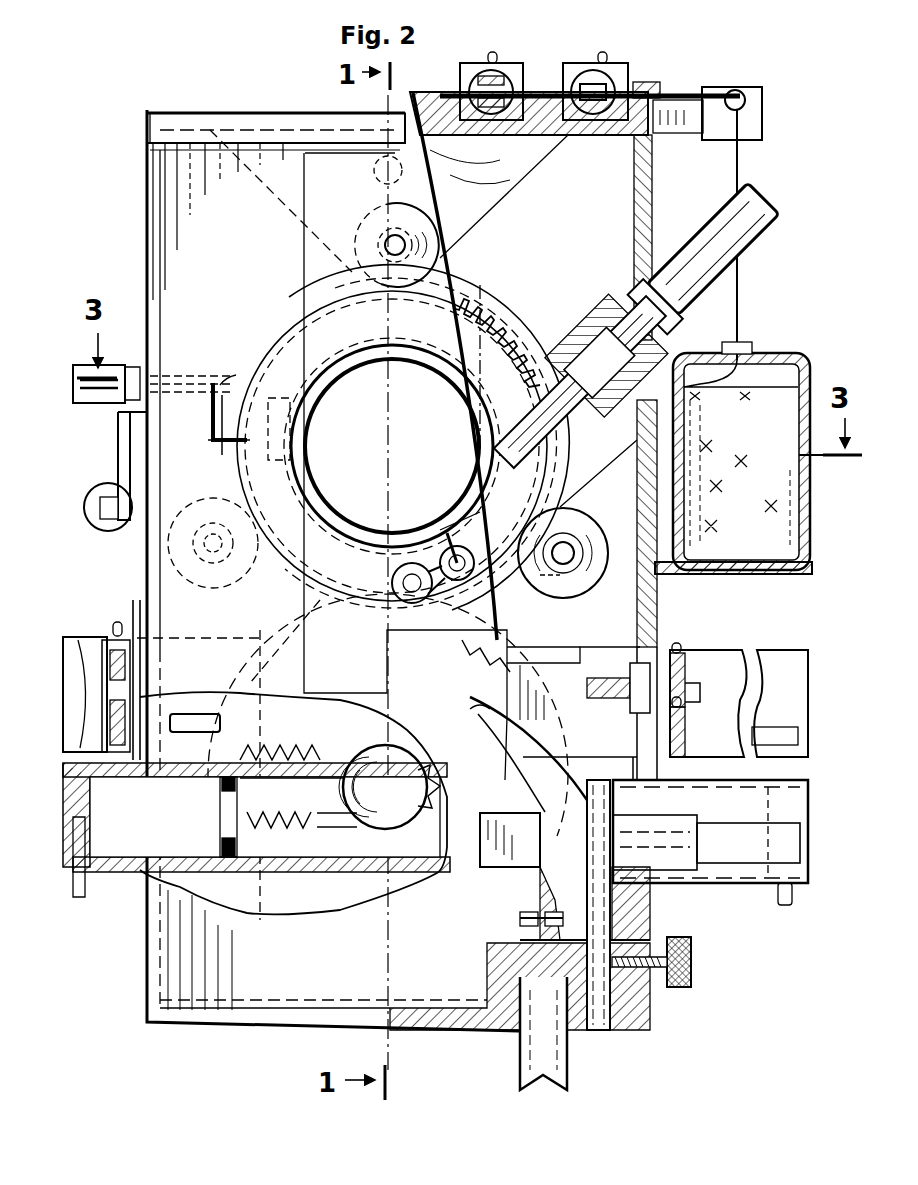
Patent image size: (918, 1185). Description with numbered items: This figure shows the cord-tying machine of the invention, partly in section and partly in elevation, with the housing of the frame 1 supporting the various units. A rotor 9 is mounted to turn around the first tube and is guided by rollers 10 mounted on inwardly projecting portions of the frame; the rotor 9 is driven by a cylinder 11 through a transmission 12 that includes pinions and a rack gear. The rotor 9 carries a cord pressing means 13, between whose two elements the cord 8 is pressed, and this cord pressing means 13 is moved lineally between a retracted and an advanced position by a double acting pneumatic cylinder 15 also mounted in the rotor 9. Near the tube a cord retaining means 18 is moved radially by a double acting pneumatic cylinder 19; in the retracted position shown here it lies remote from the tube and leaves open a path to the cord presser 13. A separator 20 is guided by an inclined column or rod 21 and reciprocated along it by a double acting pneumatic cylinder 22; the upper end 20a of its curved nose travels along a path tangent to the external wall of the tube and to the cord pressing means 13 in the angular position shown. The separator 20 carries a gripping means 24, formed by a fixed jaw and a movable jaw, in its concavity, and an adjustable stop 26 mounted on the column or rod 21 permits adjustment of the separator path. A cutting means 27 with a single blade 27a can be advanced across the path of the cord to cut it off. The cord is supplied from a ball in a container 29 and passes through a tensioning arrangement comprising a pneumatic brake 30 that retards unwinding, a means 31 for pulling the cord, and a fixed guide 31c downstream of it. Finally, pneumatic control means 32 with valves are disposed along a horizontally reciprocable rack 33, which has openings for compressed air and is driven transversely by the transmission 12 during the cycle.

The housing 1 is at (633, 254).
The cord 8 is at (434, 272).
The rotor 9 is at (449, 335).
The rollers 10 is at (362, 230).
The cylinder 11 is at (350, 858).
The transmission 12 is at (372, 754).
The cord pressing means 13 is at (468, 578).
The double acting pneumatic cylinder 15 is at (396, 586).
The cord retaining means 18 is at (546, 358).
The double acting pneumatic cylinder 19 is at (602, 318).
The separator 20 is at (540, 700).
The upper end of curved nose 20a is at (470, 716).
The column or rod 21 is at (604, 803).
The double acting pneumatic cylinder 22 is at (568, 1072).
The gripping means 24 is at (507, 868).
The adjustable stop 26 is at (668, 947).
The cutting means 27 is at (116, 456).
The blade 27a is at (226, 440).
The container 29 is at (769, 356).
The pneumatic brake 30 is at (618, 92).
The means for pulling the cord 31 is at (464, 90).
The fixed guide 31c is at (406, 112).
The pneumatic control means 32 is at (104, 640).
The rack 33 is at (712, 666).